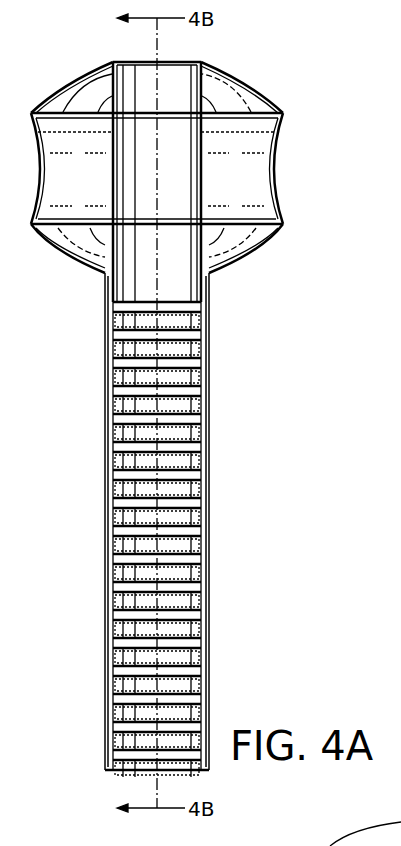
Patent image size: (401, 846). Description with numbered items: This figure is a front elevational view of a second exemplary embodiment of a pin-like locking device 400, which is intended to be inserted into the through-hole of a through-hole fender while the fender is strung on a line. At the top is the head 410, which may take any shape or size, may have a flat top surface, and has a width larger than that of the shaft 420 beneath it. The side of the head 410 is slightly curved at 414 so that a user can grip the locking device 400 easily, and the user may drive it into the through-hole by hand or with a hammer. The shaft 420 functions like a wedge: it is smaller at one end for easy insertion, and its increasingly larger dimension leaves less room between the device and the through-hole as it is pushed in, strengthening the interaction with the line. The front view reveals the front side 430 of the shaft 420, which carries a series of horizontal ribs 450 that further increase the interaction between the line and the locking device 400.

The locking device 400 is at (273, 62).
The head 410 is at (72, 75).
The curved side of head 414 is at (274, 178).
The shaft 420 is at (92, 768).
The front side 430 is at (142, 592).
The horizontal ribs 450 is at (128, 472).